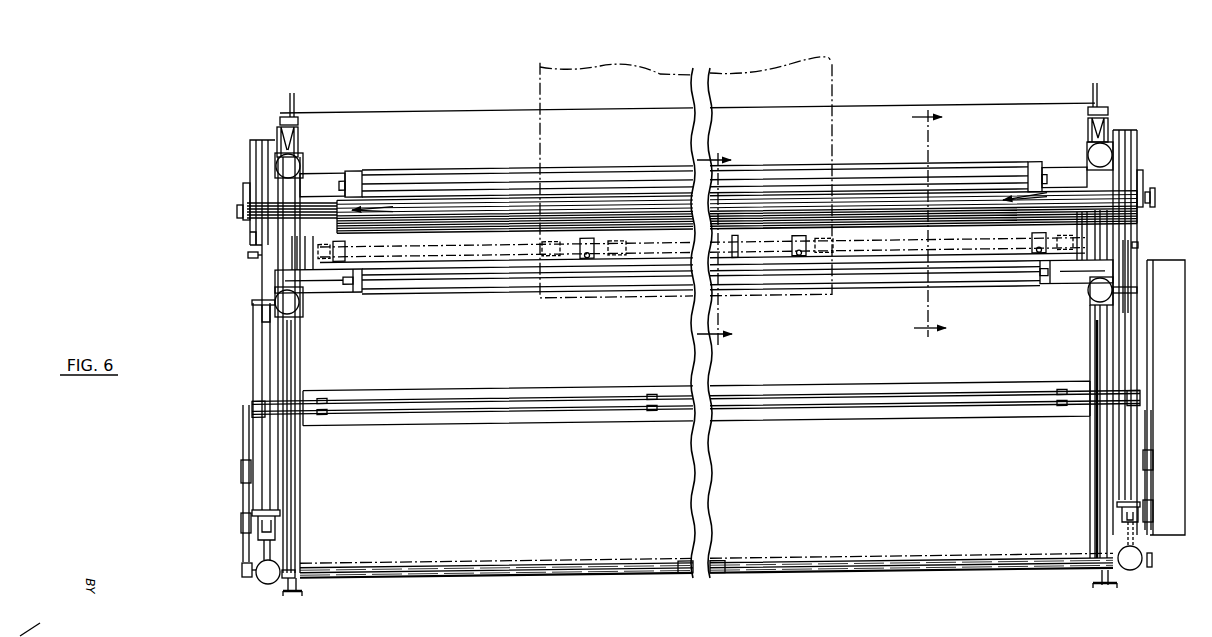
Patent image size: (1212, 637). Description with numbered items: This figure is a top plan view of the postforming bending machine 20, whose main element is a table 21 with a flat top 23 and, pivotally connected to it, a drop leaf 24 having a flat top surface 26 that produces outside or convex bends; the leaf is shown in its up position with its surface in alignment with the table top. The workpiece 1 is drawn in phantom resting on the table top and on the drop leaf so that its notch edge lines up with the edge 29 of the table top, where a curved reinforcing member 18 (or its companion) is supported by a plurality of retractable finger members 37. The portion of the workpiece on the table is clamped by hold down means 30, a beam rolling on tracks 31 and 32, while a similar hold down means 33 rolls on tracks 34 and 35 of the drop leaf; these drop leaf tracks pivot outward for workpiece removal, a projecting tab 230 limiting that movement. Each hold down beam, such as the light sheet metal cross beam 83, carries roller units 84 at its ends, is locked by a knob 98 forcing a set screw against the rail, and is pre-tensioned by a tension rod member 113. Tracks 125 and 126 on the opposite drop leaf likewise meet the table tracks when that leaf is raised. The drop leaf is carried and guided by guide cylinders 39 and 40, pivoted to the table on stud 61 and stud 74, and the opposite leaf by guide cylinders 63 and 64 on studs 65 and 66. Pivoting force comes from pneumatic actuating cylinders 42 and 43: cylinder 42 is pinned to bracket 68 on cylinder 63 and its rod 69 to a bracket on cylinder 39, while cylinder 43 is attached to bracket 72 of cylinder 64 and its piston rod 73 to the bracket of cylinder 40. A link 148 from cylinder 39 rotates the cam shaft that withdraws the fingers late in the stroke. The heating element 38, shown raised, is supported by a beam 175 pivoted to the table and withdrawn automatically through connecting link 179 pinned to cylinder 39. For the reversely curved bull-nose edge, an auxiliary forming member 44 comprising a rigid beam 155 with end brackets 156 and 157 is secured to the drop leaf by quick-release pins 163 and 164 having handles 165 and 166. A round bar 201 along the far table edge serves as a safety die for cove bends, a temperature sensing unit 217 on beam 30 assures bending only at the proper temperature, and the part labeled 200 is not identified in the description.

The workpiece 1 is at (809, 87).
The curved reinforcing member 18 is at (941, 136).
The machine 20 is at (208, 418).
The table 21 is at (478, 552).
The flat top 23 is at (963, 545).
The drop leaf 24 is at (388, 112).
The flat top surface 26 is at (432, 122).
The edge of the table top 29 is at (1047, 237).
The hold down means 30 is at (620, 297).
The track 31 is at (298, 445).
The track 32 is at (742, 154).
The hold down means 33 is at (593, 168).
The track 34 is at (299, 142).
The track 35 is at (1088, 123).
The retractable finger members 37 is at (328, 250).
The heating element 38 is at (983, 380).
The guide cylinder 39 is at (257, 157).
The guide cylinder 40 is at (1133, 148).
The actuating cylinder 42 is at (262, 357).
The actuating cylinder 43 is at (1118, 355).
The auxiliary forming member 44 is at (953, 227).
The stud 61 is at (247, 257).
The guide cylinder 63 is at (265, 574).
The guide cylinder 64 is at (1130, 571).
The stud 65 is at (282, 578).
The stud 66 is at (1150, 568).
The bracket 68 is at (265, 546).
The rod 69 is at (257, 294).
The bracket 72 is at (1134, 543).
The piston rod 73 is at (1129, 253).
The stud 74 is at (1140, 243).
The sheet metal cross beam 83 is at (540, 178).
The roller units 84 is at (307, 154).
The knob 98 is at (292, 167).
The tension rod member 113 is at (463, 186).
The track 125 is at (296, 595).
The track 126 is at (1104, 588).
The link 148 is at (262, 282).
The rigid beam 155 is at (445, 229).
The bracket 156 is at (245, 188).
The bracket 157 is at (1141, 176).
The pin 163 is at (252, 226).
The pin 164 is at (1149, 191).
The handle 165 is at (238, 210).
The handle 166 is at (1155, 198).
The beam 175 is at (253, 405).
The connecting link 179 is at (243, 483).
The rail end piece left 200 is at (683, 565).
The round bar 201 is at (770, 574).
The temperature sensing unit 217 is at (742, 256).
The projecting tab 230 is at (293, 99).